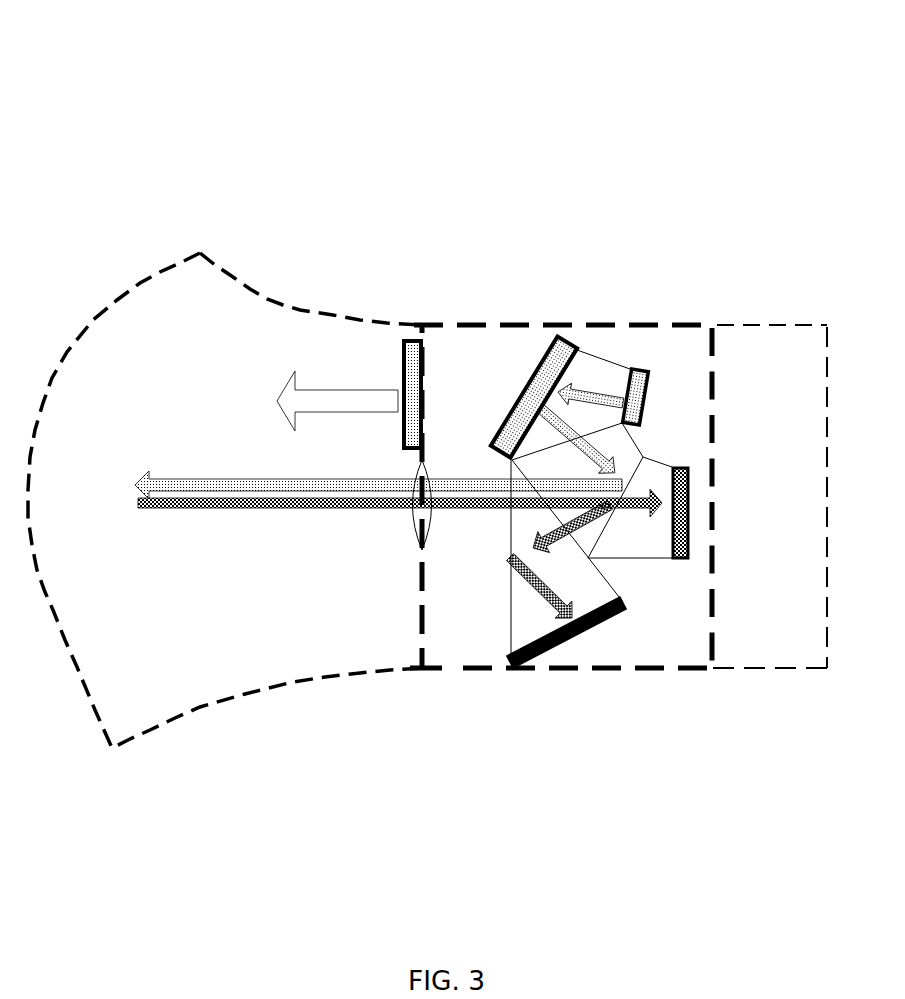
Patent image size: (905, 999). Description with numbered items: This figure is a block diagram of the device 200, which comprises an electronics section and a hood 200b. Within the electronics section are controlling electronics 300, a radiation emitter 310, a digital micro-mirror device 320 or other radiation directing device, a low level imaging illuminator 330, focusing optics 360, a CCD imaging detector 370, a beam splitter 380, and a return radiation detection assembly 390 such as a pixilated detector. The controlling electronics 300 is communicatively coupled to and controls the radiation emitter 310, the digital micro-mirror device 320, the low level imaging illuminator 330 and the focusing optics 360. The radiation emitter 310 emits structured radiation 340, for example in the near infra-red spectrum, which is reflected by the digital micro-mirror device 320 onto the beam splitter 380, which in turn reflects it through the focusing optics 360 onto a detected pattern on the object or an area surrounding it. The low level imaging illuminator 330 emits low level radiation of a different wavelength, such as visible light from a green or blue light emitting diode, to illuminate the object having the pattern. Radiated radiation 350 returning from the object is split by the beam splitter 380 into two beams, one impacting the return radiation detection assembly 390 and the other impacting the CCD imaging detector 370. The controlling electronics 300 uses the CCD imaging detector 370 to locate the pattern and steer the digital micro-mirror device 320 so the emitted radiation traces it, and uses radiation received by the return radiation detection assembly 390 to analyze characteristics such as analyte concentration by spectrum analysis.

The device 200 is at (142, 90).
The hood 200b is at (300, 680).
The controlling electronics 300 is at (772, 325).
The radiation emitter 310 is at (633, 368).
The digital micro-mirror device 320 is at (523, 382).
The low level imaging illuminator 330 is at (400, 388).
The structured radiation 340 is at (177, 480).
The radiated radiation 350 is at (190, 502).
The focusing optics 360 is at (412, 540).
The CCD imaging detector 370 is at (510, 660).
The beam splitter 380 is at (643, 562).
The return radiation detection assembly 390 is at (680, 560).